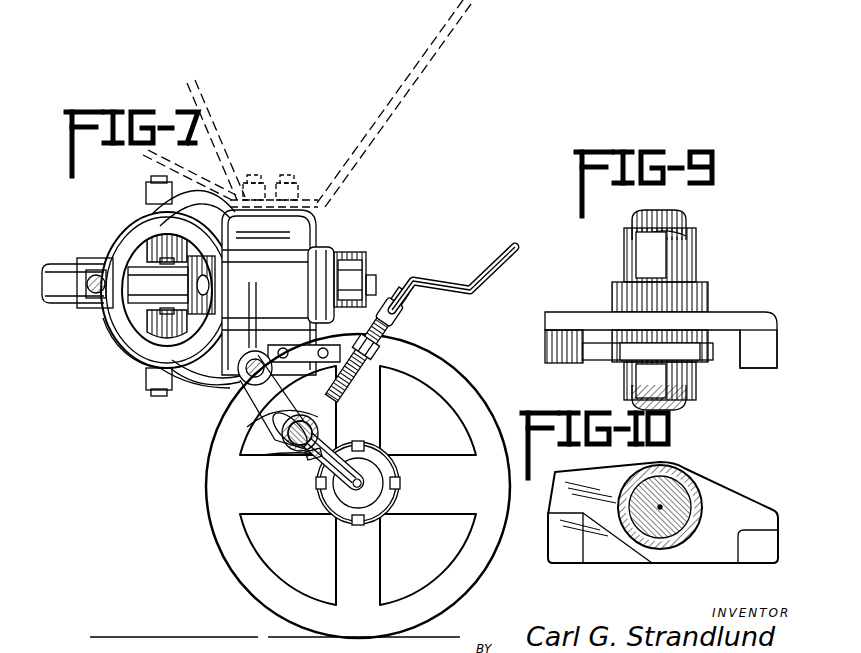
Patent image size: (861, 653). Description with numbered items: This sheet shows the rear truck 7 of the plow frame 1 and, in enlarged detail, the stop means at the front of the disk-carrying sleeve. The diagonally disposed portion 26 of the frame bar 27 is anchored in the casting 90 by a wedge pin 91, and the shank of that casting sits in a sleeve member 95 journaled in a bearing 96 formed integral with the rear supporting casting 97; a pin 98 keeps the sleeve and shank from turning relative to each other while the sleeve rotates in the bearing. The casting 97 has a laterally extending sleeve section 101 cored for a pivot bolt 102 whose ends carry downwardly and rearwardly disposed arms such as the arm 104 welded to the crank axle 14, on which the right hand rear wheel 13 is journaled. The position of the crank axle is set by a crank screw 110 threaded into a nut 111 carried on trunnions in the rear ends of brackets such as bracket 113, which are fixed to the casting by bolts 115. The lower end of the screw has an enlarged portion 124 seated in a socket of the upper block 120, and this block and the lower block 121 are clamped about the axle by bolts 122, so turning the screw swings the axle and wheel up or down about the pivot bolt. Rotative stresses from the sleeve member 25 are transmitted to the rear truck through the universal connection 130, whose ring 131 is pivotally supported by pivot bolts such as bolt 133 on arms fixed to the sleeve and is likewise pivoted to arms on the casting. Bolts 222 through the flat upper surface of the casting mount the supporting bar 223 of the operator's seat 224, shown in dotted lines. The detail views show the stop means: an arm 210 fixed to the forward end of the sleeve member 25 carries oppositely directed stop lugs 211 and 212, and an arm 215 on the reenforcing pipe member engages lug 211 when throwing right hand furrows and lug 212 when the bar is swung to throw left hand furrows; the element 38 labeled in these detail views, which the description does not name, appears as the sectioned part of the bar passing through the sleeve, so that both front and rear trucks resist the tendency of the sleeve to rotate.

In FIG. 9, the frame structure 1 is at (614, 250).
In FIG. 7, the rear truck 7 is at (378, 441).
In FIG. 7, the rear wheel 13 is at (486, 529).
In FIG. 7, the crank axle 14 is at (313, 458).
In FIG. 7, the sleeve member 25 is at (51, 272).
In FIG. 9, the sleeve member 25 is at (688, 250).
In FIG. 9, the diagonally disposed portion 26 is at (686, 214).
In FIG. 9, the frame bar 27 is at (690, 405).
In FIG. 10, the frame bar 27 is at (693, 487).
In FIG. 9, the bore / journal 38 is at (690, 377).
In FIG. 10, the bore / journal 38 is at (670, 490).
In FIG. 7, the casting 90 is at (156, 300).
In FIG. 7, the wedge pin 91 is at (176, 255).
In FIG. 7, the sleeve member 95 is at (360, 275).
In FIG. 7, the bearing 96 is at (300, 226).
In FIG. 7, the rear supporting casting 97 is at (218, 390).
In FIG. 7, the pin 98 is at (348, 252).
In FIG. 7, the sleeve section 101 is at (186, 200).
In FIG. 7, the pivot bolt 102 is at (236, 390).
In FIG. 7, the arm 104 is at (262, 392).
In FIG. 7, the crank screw 110 is at (393, 317).
In FIG. 7, the nut 111 is at (378, 357).
In FIG. 7, the bracket 113 is at (343, 340).
In FIG. 7, the bolts 115 is at (340, 384).
In FIG. 7, the upper block 120 is at (262, 422).
In FIG. 7, the lower block 121 is at (260, 453).
In FIG. 7, the bolts 122 is at (300, 456).
In FIG. 7, the enlarged portion 124 is at (320, 422).
In FIG. 7, the universal connection 130 is at (127, 210).
In FIG. 7, the ring 131 is at (116, 323).
In FIG. 7, the pivot bolt 133 is at (88, 303).
In FIG. 9, the arm 210 is at (680, 322).
In FIG. 10, the arm 210 is at (737, 507).
In FIG. 9, the stop lug 211 is at (561, 360).
In FIG. 10, the stop lug 211 is at (556, 552).
In FIG. 9, the stop lug 212 is at (760, 368).
In FIG. 10, the stop lug 212 is at (760, 544).
In FIG. 9, the arm 215 is at (600, 352).
In FIG. 10, the arm 215 is at (611, 532).
In FIG. 7, the bolts 222 is at (290, 183).
In FIG. 7, the supporting bar 223 is at (412, 80).
In FIG. 7, the seat 224 is at (444, 103).